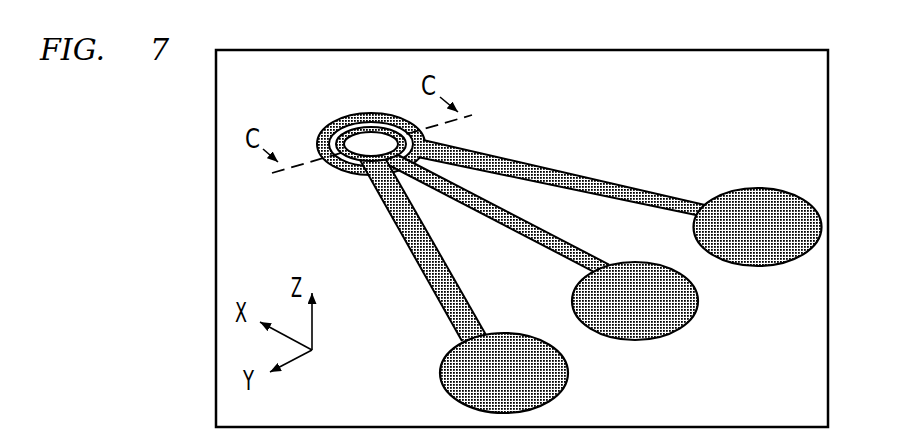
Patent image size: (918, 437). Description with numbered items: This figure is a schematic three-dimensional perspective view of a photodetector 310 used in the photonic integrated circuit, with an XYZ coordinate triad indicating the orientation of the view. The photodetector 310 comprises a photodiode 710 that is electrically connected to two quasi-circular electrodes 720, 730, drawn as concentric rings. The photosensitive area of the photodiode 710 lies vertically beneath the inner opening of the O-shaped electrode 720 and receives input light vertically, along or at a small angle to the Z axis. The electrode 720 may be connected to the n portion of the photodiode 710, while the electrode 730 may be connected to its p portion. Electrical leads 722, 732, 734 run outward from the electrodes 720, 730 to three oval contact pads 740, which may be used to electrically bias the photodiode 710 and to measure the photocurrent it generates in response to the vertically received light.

The photodetector 310 is at (700, 100).
The photodiode 710 is at (466, 201).
The O-shaped electrode 720 is at (362, 111).
The quasi-circular electrode 730 is at (396, 114).
The electrical lead 732 is at (560, 175).
The electrical lead 722 is at (538, 230).
The electrical lead 734 is at (455, 292).
The contact pads 740 is at (564, 374).